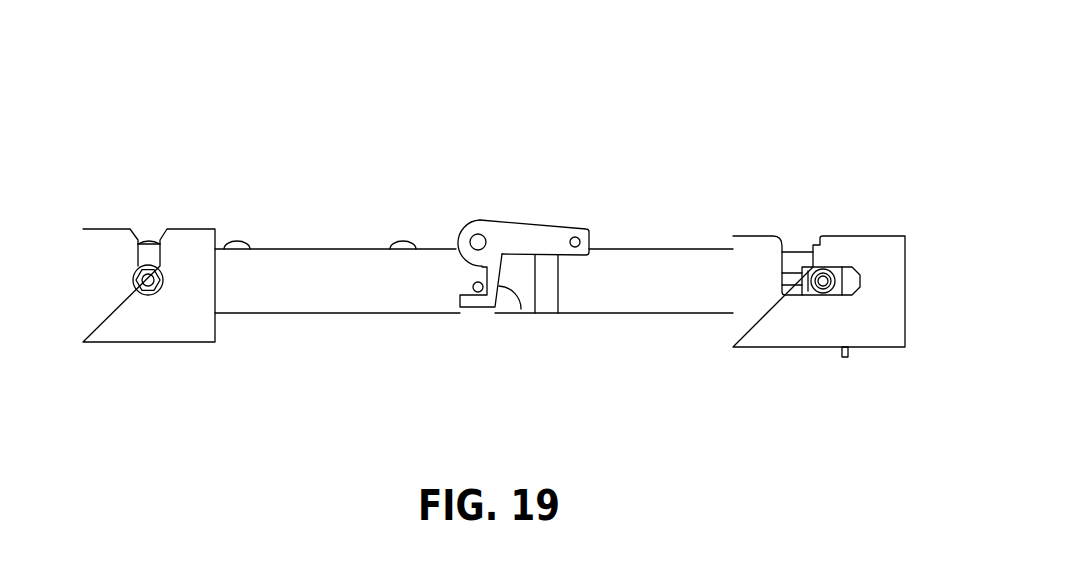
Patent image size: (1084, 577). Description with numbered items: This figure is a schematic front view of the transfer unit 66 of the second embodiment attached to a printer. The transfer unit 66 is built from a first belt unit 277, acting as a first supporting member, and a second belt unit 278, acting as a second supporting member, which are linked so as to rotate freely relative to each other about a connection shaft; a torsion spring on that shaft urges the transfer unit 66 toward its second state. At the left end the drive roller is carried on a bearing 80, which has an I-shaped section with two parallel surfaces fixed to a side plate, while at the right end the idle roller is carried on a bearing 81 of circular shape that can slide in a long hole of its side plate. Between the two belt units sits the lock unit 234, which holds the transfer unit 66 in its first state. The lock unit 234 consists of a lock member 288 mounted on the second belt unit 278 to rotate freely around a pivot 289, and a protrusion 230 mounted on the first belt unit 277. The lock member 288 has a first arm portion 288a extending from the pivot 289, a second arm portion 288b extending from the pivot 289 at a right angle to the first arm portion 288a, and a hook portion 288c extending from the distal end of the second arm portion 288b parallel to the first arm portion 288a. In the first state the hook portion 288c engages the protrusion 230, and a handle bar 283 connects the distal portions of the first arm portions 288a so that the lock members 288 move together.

The transfer unit 66 is at (494, 231).
The lock unit 234 is at (508, 231).
The protrusion 230 is at (481, 265).
The lock member 288 is at (525, 183).
The first arm portion 288a is at (475, 198).
The second arm portion 288b is at (511, 300).
The hook portion 288c is at (476, 293).
The pivot 289 is at (481, 219).
The handle bar 283 is at (580, 234).
The first belt unit 277 is at (302, 247).
The second belt unit 278 is at (673, 245).
The bearing 80 is at (148, 288).
The bearing 81 is at (822, 290).